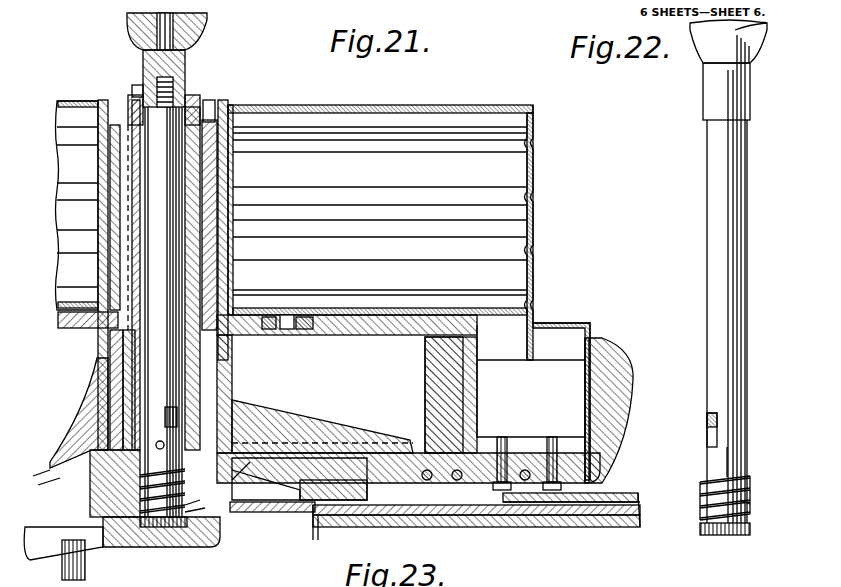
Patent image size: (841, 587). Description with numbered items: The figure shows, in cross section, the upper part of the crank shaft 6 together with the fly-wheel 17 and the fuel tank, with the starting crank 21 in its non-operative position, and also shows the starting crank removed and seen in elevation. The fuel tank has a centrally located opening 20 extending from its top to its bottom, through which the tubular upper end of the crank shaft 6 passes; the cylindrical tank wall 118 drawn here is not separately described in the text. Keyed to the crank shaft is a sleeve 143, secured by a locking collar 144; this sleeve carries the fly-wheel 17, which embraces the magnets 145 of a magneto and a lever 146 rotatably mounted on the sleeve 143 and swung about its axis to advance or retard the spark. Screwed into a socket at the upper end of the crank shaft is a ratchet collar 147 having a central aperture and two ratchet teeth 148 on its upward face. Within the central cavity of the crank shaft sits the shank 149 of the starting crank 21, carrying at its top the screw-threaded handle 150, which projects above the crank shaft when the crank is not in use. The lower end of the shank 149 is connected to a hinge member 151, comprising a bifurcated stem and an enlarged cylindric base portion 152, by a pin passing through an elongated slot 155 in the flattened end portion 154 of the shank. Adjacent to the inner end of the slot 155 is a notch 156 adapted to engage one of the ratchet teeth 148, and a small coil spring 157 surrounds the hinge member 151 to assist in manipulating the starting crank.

In FIG. 21, the crank shaft 6 is at (220, 352).
In FIG. 21, the fly-wheel 17 is at (368, 335).
In FIG. 21, the centrally located opening 20 is at (213, 118).
In FIG. 21, the starting crank 21 is at (143, 68).
In FIG. 21, the cylinder 118 is at (533, 180).
In FIG. 21, the sleeve 143 is at (233, 218).
In FIG. 21, the locking collar 144 is at (240, 142).
In FIG. 21, the magnets 145 is at (432, 397).
In FIG. 21, the lever 146 is at (285, 437).
In FIG. 21, the ratchet collar 147 is at (128, 100).
In FIG. 21, the ratchet teeth 148 is at (132, 90).
In FIG. 21, the shank 149 is at (150, 322).
In FIG. 22, the shank 149 is at (717, 312).
In FIG. 21, the handle 150 is at (127, 30).
In FIG. 22, the handle 150 is at (735, 48).
In FIG. 21, the hinge member 151 is at (148, 460).
In FIG. 22, the hinge member 151 is at (750, 480).
In FIG. 21, the base portion 152 is at (175, 527).
In FIG. 22, the base portion 152 is at (727, 535).
In FIG. 22, the end portion 154 is at (727, 465).
In FIG. 21, the elongated slot 155 is at (160, 440).
In FIG. 22, the notch 156 is at (710, 431).
In FIG. 21, the coil spring 157 is at (190, 500).
In FIG. 22, the coil spring 157 is at (745, 505).